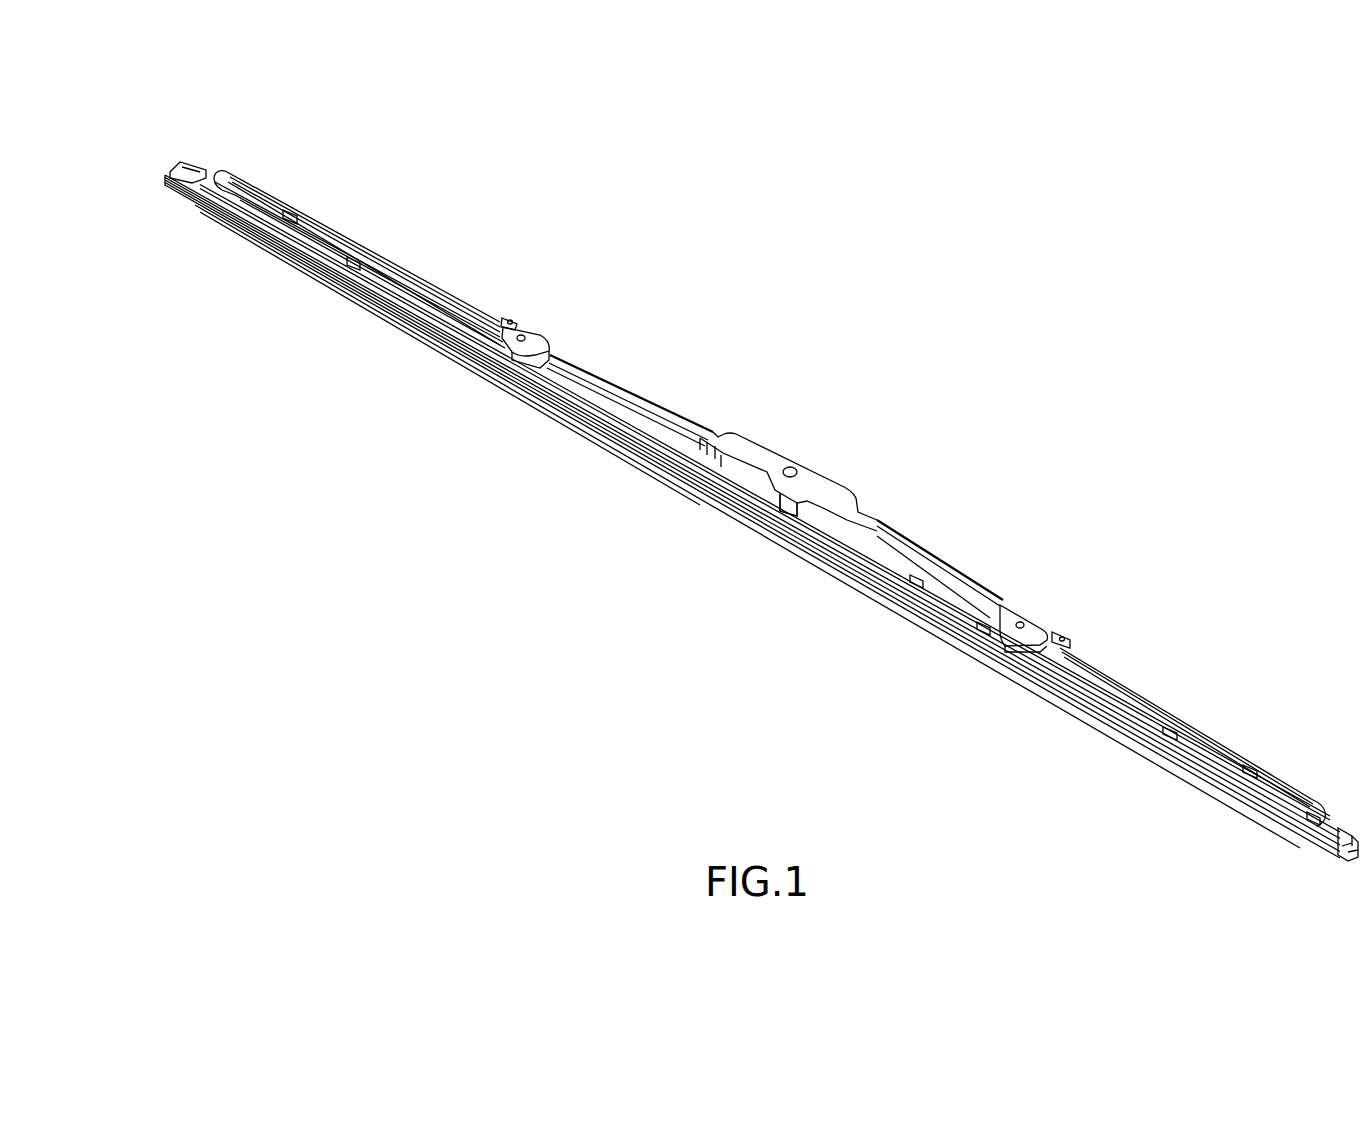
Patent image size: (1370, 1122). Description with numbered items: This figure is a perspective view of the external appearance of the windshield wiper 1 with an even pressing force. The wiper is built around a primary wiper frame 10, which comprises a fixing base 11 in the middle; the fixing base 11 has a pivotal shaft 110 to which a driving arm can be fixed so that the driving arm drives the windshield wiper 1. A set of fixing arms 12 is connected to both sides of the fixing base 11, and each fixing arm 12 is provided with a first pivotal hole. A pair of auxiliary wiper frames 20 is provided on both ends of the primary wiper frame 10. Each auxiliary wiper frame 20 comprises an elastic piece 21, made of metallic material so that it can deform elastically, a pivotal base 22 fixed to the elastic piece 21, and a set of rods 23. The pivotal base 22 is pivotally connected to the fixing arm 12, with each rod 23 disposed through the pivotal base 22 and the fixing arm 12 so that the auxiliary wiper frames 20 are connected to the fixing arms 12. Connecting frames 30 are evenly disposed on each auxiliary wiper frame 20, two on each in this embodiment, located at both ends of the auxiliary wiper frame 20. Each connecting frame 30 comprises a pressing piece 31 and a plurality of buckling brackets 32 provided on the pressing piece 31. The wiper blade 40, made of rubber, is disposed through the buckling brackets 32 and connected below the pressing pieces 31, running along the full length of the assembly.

The windshield wiper 1 is at (763, 157).
The primary wiper frame 10 is at (812, 456).
The fixing base 11 is at (769, 454).
The pivotal shaft 110 is at (781, 502).
The fixing arm 12 is at (622, 392).
The auxiliary wiper frame 20 is at (1131, 682).
The elastic piece 21 is at (1103, 686).
The pivotal base 22 is at (1002, 642).
The rod 23 is at (1021, 620).
The connecting frame 30 is at (940, 572).
The pressing piece 31 is at (903, 549).
The buckling bracket 32 is at (832, 548).
The wiper blade 40 is at (895, 606).